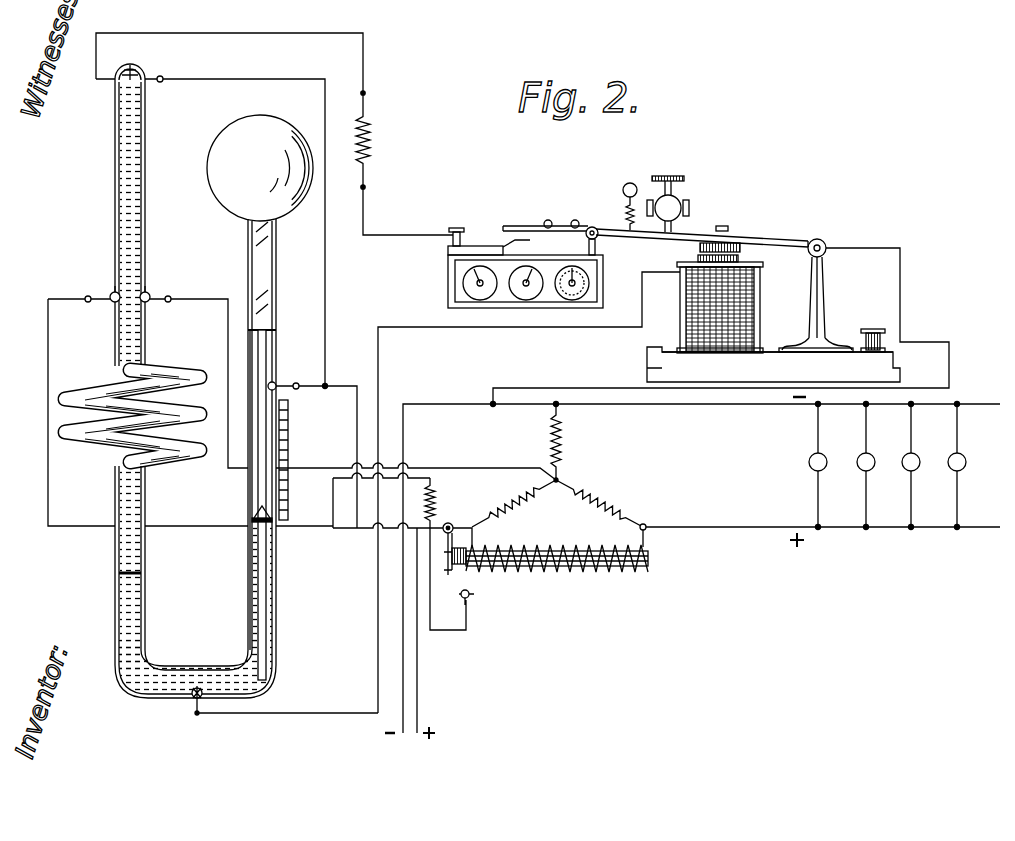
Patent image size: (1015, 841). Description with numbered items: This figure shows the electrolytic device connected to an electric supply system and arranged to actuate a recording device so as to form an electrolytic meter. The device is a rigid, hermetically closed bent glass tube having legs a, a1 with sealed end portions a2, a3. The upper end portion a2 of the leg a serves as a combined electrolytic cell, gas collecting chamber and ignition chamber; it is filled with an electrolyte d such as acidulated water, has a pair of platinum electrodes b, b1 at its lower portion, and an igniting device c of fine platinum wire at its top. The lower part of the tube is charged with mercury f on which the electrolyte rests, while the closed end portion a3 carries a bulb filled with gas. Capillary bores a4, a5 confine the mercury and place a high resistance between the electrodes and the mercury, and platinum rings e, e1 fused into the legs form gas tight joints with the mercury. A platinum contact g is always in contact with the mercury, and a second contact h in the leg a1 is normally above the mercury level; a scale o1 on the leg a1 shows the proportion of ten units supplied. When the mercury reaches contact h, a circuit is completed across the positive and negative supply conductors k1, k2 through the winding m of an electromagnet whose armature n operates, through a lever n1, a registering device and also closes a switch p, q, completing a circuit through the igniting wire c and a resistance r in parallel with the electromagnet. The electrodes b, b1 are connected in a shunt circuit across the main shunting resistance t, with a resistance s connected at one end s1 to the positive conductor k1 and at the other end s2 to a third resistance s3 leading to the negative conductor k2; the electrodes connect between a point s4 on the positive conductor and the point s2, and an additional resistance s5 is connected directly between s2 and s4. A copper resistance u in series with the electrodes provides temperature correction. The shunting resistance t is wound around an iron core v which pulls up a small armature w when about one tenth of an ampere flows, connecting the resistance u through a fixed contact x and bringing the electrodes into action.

The leg of bent tube a is at (117, 630).
The leg of bent tube a1 is at (246, 477).
The upper end portion of leg a a2 is at (115, 157).
The upper closed end portion a3 is at (268, 128).
The capillary bore a4 is at (63, 390).
The capillary bore a5 is at (280, 582).
The electrode b is at (114, 292).
The electrode b1 is at (147, 293).
The igniting device c is at (110, 83).
The electrolyte d is at (141, 126).
The platinum ring e is at (117, 577).
The platinum ring e1 is at (250, 523).
The mercury f is at (258, 620).
The platinum contact g is at (195, 710).
The platinum contact h is at (278, 387).
The scale o1 is at (290, 427).
The resistance r is at (372, 142).
The positive supply conductor k1 is at (418, 685).
The negative supply conductor k2 is at (394, 701).
The resistance u is at (441, 494).
The resistance s is at (602, 498).
The end of resistance s s1 is at (663, 514).
The point of resistance s s2 is at (560, 478).
The third resistance s3 is at (566, 435).
The point on positive conductor s4 is at (450, 523).
The additional resistance s5 is at (523, 500).
The main shunting resistance t is at (605, 580).
The iron core v is at (648, 555).
The armature w is at (462, 570).
The fixed contact x is at (470, 600).
The switch q is at (490, 238).
The switch p is at (505, 232).
The armature n is at (737, 246).
The lever n1 is at (693, 235).
The winding of electromagnet m is at (681, 303).